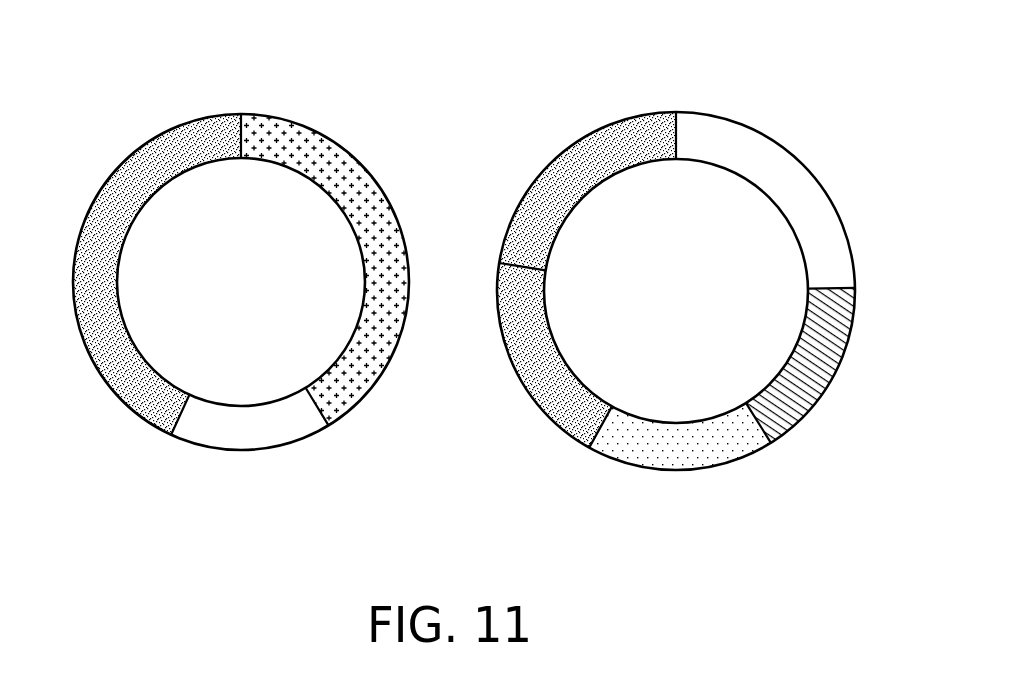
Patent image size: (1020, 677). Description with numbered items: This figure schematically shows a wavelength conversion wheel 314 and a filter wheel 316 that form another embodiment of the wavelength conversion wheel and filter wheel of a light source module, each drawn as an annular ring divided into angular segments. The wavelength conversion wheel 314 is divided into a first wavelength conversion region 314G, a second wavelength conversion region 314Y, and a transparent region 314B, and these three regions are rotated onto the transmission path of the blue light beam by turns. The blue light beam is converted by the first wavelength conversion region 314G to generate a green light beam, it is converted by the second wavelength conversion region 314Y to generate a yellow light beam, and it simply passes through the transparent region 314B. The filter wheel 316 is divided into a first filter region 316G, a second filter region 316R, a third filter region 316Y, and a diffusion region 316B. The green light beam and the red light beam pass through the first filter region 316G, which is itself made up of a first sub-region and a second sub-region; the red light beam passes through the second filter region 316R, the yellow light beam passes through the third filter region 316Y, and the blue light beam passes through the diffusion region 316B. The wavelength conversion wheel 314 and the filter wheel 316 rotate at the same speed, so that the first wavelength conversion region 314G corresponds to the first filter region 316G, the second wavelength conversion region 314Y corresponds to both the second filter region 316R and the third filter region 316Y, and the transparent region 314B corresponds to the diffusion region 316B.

The wavelength conversion wheel 314 is at (110, 445).
The first wavelength conversion region 314G is at (98, 232).
The second wavelength conversion region 314Y is at (337, 163).
The transparent region 314B is at (250, 430).
The filter wheel 316 is at (547, 453).
The first filter region 316G is at (633, 133).
The third filter region 316Y is at (773, 173).
The second filter region 316R is at (810, 370).
The diffusion region 316B is at (688, 458).